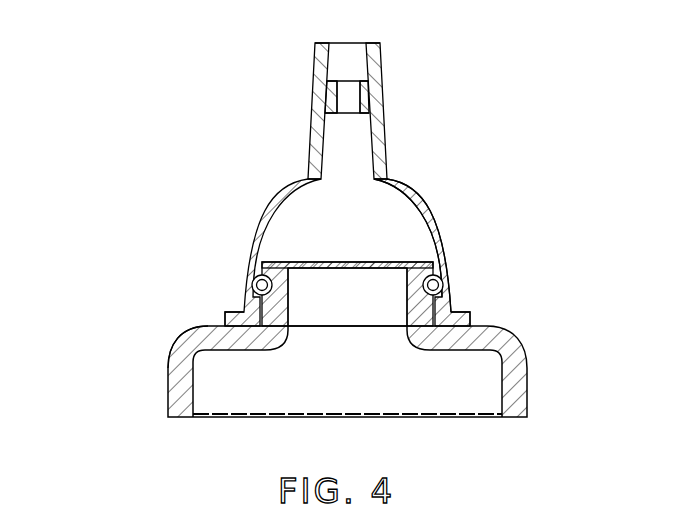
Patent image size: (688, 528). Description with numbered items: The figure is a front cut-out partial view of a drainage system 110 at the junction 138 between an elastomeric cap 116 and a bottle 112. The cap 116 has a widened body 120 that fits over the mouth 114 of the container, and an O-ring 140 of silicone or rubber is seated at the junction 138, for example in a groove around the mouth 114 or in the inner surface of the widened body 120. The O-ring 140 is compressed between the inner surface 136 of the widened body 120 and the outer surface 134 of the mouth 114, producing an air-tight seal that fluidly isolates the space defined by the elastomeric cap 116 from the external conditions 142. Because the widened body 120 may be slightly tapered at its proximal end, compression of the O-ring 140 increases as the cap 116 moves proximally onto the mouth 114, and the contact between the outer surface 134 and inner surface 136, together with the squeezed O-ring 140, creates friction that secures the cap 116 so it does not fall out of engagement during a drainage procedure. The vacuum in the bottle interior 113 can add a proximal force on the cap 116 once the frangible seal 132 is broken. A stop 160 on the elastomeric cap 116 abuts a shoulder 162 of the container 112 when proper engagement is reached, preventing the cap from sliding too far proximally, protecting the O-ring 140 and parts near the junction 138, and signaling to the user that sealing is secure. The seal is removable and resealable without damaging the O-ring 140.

The drainage system 110 is at (178, 103).
The bottle 112 is at (168, 398).
The bottle interior 113 is at (445, 387).
The mouth 114 is at (345, 324).
The elastomeric cap 116 is at (418, 196).
The widened body 120 is at (292, 186).
The frangible seal 132 is at (322, 262).
The outer surface 134 is at (478, 292).
The inner surface 136 is at (433, 244).
The junction 138 is at (480, 205).
The O-ring 140 is at (442, 278).
The external conditions 142 is at (468, 80).
The stop 160 is at (240, 312).
The shoulder 162 is at (193, 337).